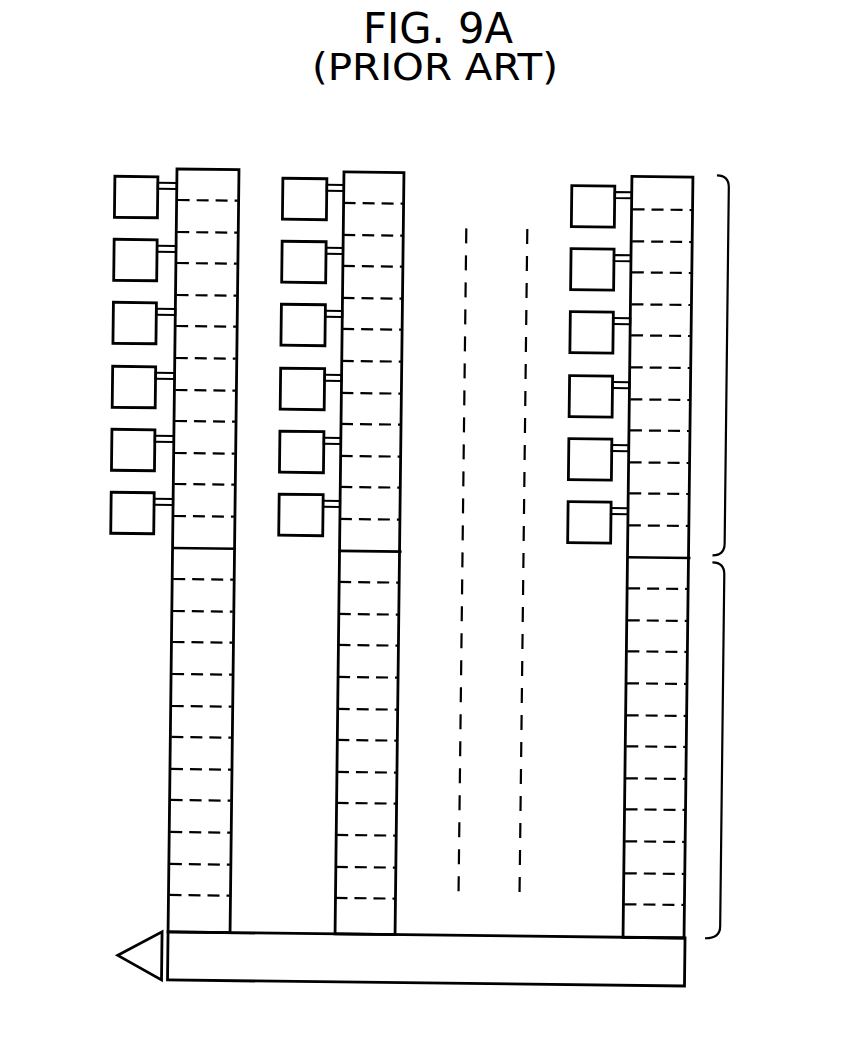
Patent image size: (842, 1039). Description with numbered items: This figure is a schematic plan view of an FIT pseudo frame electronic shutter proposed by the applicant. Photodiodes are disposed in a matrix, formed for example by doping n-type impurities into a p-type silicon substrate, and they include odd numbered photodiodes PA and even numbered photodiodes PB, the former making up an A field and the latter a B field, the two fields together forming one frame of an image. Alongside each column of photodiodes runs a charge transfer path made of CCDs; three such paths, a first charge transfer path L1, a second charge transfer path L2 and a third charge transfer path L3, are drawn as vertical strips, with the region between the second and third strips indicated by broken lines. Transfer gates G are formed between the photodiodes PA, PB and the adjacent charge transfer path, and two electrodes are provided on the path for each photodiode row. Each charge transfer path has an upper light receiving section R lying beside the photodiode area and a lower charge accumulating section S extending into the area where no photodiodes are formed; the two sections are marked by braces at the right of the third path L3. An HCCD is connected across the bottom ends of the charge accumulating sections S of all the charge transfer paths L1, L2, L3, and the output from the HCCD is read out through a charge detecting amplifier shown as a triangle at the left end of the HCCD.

The charge transfer path L1 is at (209, 168).
The charge transfer path L2 is at (377, 170).
The charge transfer path L3 is at (665, 171).
The transfer gate G is at (168, 182).
The odd numbered photodiode PA is at (362, 328).
The even numbered photodiode PB is at (362, 391).
The light receiving section R is at (734, 365).
The charge accumulating section S is at (729, 750).
The element HCCD is at (540, 980).